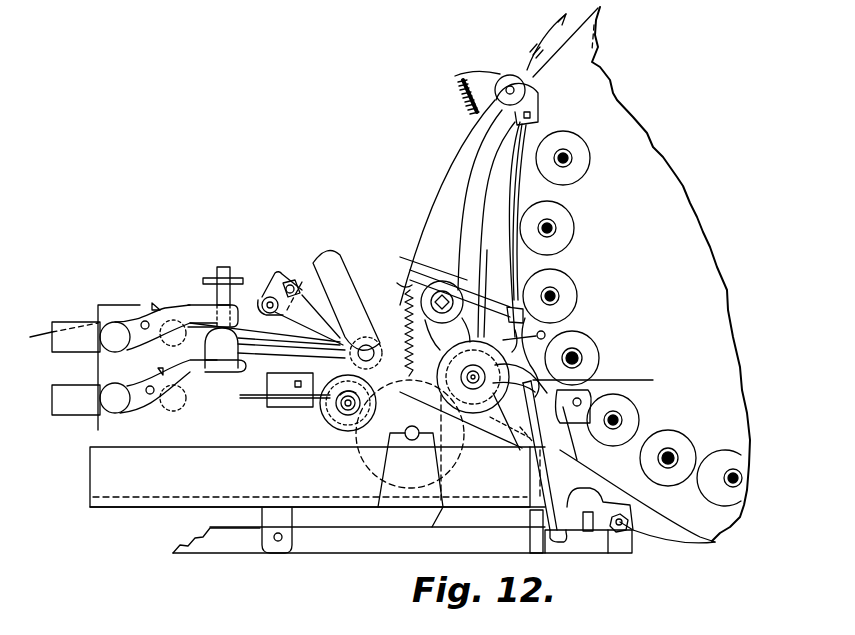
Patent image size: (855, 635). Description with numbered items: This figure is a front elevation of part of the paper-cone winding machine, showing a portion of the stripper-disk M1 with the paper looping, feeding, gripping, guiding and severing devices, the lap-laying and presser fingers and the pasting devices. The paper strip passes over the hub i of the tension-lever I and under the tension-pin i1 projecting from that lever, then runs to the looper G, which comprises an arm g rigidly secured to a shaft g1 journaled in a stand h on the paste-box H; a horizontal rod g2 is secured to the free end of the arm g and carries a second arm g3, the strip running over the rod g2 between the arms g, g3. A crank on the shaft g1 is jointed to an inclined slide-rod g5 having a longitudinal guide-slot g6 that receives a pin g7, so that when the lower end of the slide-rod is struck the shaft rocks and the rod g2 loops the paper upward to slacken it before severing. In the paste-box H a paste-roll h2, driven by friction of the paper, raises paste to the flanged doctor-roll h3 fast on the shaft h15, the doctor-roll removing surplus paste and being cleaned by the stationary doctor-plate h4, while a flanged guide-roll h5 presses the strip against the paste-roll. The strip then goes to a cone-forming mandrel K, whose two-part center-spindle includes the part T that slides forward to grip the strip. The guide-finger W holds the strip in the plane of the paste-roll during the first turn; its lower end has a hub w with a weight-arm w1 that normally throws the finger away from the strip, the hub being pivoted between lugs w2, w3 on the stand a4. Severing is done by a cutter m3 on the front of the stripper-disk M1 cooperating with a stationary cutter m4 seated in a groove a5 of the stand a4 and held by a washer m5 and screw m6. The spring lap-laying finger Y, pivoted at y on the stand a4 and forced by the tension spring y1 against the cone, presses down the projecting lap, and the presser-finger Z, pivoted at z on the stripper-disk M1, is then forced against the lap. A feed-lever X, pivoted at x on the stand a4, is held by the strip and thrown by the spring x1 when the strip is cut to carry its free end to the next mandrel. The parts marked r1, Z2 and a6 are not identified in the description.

The stripper-disk M1 is at (592, 60).
The pivot of lap-laying finger y is at (512, 91).
The tension spring y1 is at (468, 100).
The stand a4 is at (440, 200).
The cutter m3 is at (512, 315).
The spring lap-laying finger Y is at (513, 193).
The stationary cutter m4 is at (483, 300).
The groove a5 is at (410, 263).
The washer m5 is at (441, 288).
The screw m6 is at (443, 310).
The spring x1 is at (400, 322).
The looper G is at (352, 293).
The stand h is at (258, 292).
The shaft g1 is at (267, 297).
The inclined slide-rod g5 is at (297, 283).
The arm g is at (318, 329).
The arm g3 is at (346, 301).
The horizontal rod g2 is at (357, 358).
The tension-lever I is at (82, 345).
The hub i is at (120, 347).
The tension-pin i1 is at (145, 321).
The stationary doctor-plate h4 is at (262, 396).
The flanged doctor-roll h3 is at (325, 418).
The shaft h15 is at (346, 410).
The paste-roll h2 is at (437, 383).
The pivot of feed-lever x is at (412, 427).
The flanged guide-roll h5 is at (448, 440).
The pin g7 is at (510, 408).
The longitudinal guide-slot g6 is at (520, 452).
The paste-box H is at (317, 500).
The presser-finger Z is at (545, 338).
The pivot of presser-finger z is at (505, 341).
The part of center-spindle T is at (572, 358).
The hub r1 is at (575, 360).
The cone forming mandrel K is at (580, 355).
The feed-lever X is at (600, 383).
The guide-finger W is at (556, 466).
The pulley Z2 is at (655, 430).
The curved blade a6 is at (660, 520).
The hub w is at (582, 552).
The weight-arm w1 is at (580, 552).
The lug w2 is at (537, 553).
The lug w3 is at (630, 553).